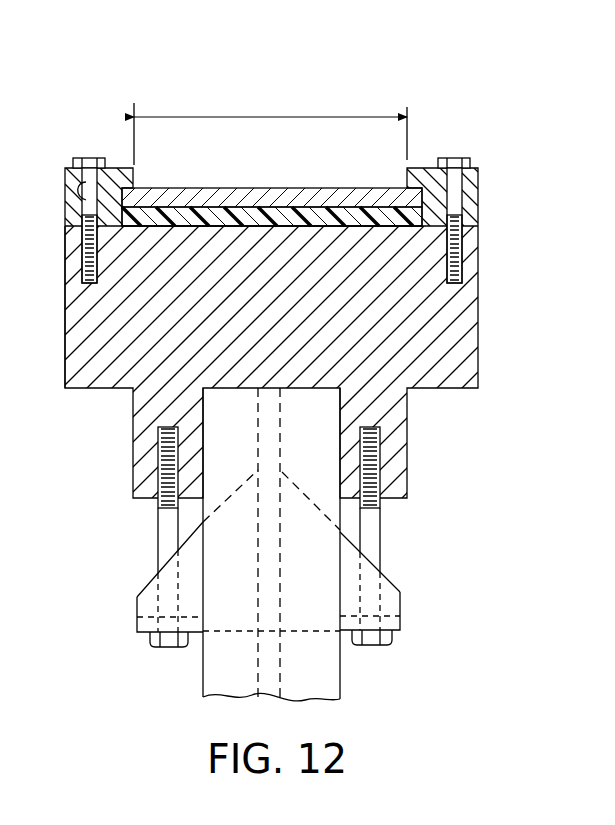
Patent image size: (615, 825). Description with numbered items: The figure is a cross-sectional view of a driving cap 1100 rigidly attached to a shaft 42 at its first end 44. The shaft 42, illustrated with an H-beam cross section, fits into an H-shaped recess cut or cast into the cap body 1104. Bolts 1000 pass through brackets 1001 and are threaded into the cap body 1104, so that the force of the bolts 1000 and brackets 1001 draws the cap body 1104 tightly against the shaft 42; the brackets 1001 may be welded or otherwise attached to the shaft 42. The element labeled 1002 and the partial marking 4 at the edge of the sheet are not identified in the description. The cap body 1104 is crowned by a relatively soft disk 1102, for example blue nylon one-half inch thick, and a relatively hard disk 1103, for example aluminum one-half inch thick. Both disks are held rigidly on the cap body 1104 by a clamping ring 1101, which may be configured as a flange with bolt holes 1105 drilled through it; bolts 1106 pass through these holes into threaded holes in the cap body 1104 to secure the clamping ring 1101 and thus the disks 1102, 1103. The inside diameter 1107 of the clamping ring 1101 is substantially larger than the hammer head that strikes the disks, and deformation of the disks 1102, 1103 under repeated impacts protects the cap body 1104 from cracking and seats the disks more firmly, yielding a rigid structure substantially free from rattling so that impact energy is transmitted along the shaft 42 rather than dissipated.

The tissue sampling/processing device 4 is at (32, 307).
The shaft 42 is at (203, 680).
The first end 44 is at (293, 387).
The bolts 1000 is at (373, 535).
The brackets 1001 is at (400, 607).
The nut 1002 is at (134, 637).
The driving cap 1100 is at (423, 133).
The clamping ring 1101 is at (118, 166).
The relatively soft disk 1102 is at (242, 222).
The relatively hard disk 1103 is at (285, 196).
The cap body 1104 is at (65, 367).
The bolt holes 1105 is at (80, 193).
The bolts 1106 is at (88, 157).
The inside diameter 1107 is at (235, 116).